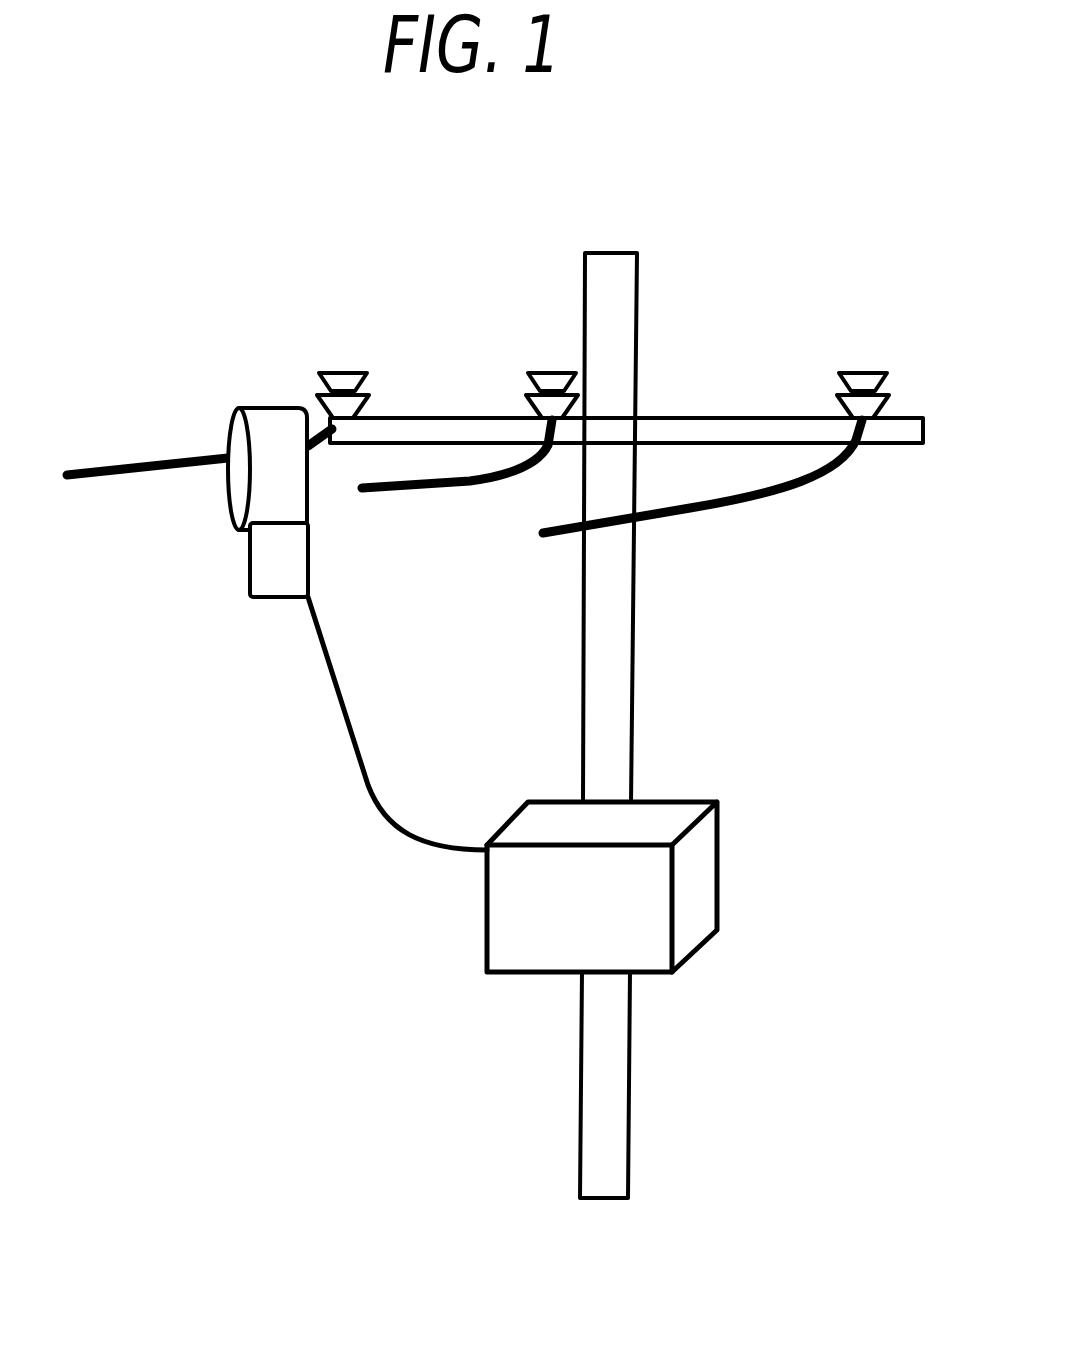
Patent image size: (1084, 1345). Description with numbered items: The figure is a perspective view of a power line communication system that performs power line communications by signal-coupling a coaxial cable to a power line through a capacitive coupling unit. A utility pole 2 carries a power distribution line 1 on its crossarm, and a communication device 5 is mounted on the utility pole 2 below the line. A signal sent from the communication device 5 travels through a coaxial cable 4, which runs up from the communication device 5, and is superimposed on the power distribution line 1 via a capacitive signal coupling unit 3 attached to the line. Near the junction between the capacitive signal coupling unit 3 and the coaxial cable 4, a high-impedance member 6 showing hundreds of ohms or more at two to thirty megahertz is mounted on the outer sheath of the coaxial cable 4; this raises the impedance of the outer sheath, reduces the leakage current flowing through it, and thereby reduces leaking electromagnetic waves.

The power distribution line 1 is at (107, 463).
The utility pole 2 is at (587, 1160).
The capacitive signal coupling unit 3 is at (253, 413).
The coaxial cable 4 is at (367, 787).
The communication device 5 is at (702, 878).
The high-impedance member 6 is at (260, 568).